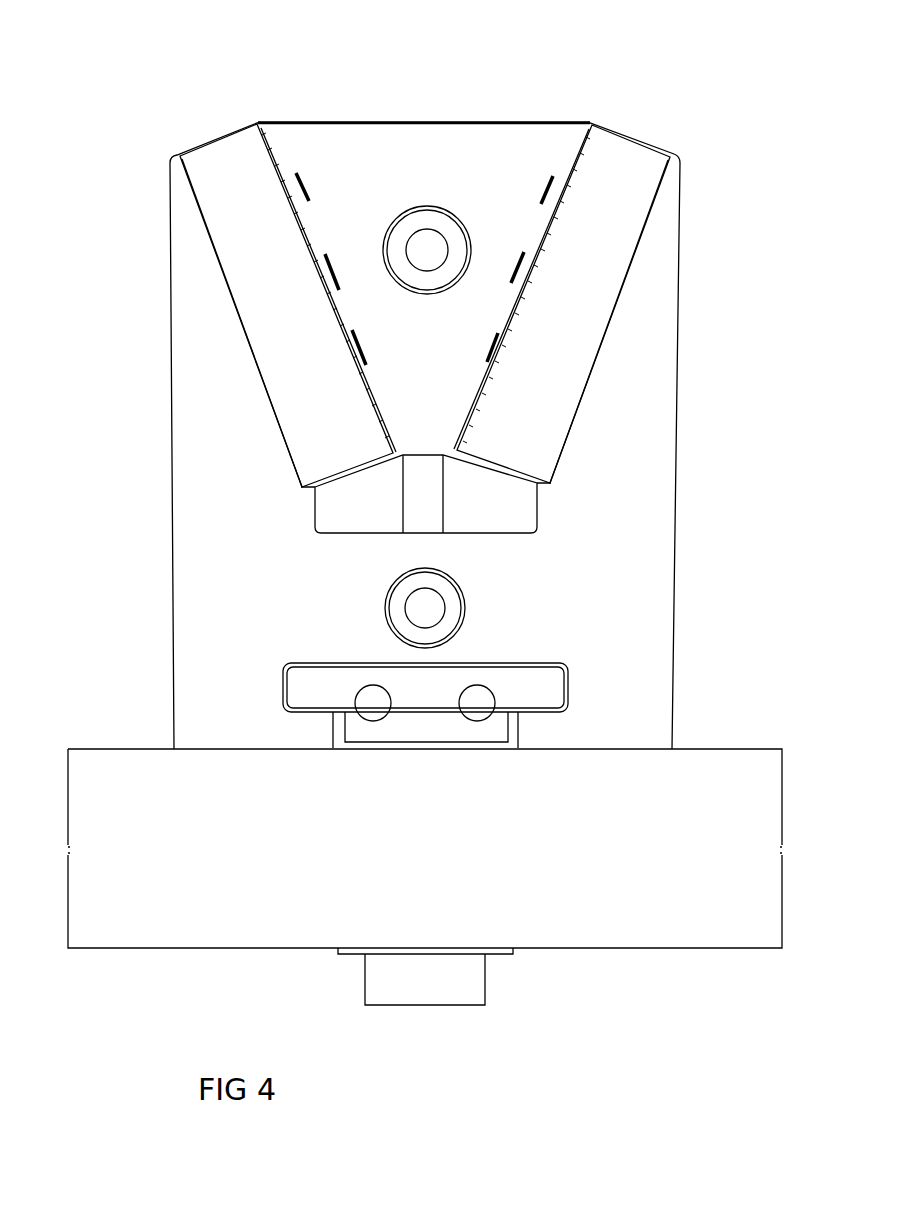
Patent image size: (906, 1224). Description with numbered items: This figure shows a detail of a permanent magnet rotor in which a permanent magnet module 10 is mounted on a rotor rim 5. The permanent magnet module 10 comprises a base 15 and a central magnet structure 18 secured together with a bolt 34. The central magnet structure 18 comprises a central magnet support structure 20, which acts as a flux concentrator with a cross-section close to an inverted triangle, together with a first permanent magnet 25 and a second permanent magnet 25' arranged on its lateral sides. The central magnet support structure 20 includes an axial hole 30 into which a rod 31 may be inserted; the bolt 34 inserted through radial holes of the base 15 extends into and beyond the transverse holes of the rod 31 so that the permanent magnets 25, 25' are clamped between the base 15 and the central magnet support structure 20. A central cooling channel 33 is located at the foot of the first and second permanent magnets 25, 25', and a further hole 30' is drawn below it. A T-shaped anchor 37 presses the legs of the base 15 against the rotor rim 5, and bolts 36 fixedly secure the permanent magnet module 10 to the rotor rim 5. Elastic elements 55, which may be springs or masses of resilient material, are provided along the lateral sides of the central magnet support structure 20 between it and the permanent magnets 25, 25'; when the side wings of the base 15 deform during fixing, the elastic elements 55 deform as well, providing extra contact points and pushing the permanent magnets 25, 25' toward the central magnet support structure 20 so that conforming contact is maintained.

The rotor rim 5 is at (718, 749).
The permanent magnet module 10 is at (138, 427).
The base 15 is at (680, 360).
The central magnet structure 18 is at (576, 102).
The central magnet support structure 20 is at (445, 122).
The first permanent magnet 25 is at (586, 262).
The second permanent magnet 25' is at (264, 263).
The axial hole 30 is at (467, 214).
The lower pivot 30' is at (478, 602).
The rod 31 is at (430, 245).
The central cooling channel 33 is at (336, 505).
The bolt 34 is at (446, 505).
The bolt 36 is at (483, 1000).
The anchor 37 is at (530, 678).
The elastic elements 55 is at (303, 187).